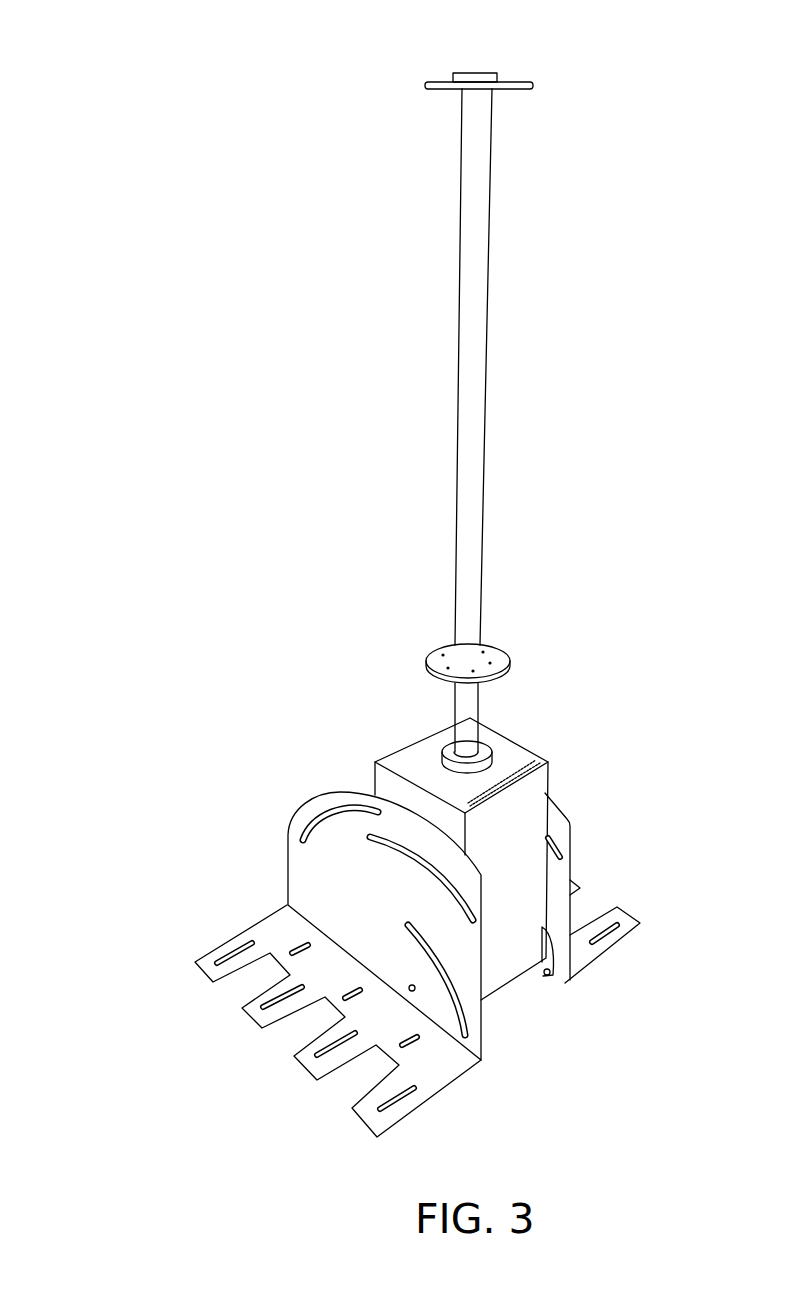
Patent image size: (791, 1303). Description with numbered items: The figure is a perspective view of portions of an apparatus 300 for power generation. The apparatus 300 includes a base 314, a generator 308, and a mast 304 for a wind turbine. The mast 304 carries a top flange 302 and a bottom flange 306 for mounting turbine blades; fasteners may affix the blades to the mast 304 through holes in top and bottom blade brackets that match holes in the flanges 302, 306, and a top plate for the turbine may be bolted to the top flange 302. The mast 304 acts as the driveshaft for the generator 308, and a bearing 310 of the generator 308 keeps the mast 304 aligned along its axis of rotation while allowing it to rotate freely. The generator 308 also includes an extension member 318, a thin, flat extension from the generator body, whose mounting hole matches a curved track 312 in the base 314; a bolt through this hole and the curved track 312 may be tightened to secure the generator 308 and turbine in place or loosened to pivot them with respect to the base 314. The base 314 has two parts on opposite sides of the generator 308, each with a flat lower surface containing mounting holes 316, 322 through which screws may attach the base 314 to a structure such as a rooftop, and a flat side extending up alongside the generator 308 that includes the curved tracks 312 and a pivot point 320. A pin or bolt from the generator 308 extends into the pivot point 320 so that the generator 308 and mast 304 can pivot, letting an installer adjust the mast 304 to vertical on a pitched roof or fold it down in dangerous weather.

The apparatus for power generation 300 is at (108, 94).
The top flange 302 is at (427, 84).
The mast 304 is at (473, 232).
The bottom flange 306 is at (441, 648).
The generator 308 is at (415, 746).
The bearing 310 is at (487, 752).
The curved track 312 is at (314, 812).
The base 314 is at (289, 876).
The mounting hole 316 is at (241, 944).
The extension member 318 is at (547, 977).
The pivot point 320 is at (414, 990).
The mounting hole 322 is at (412, 1043).